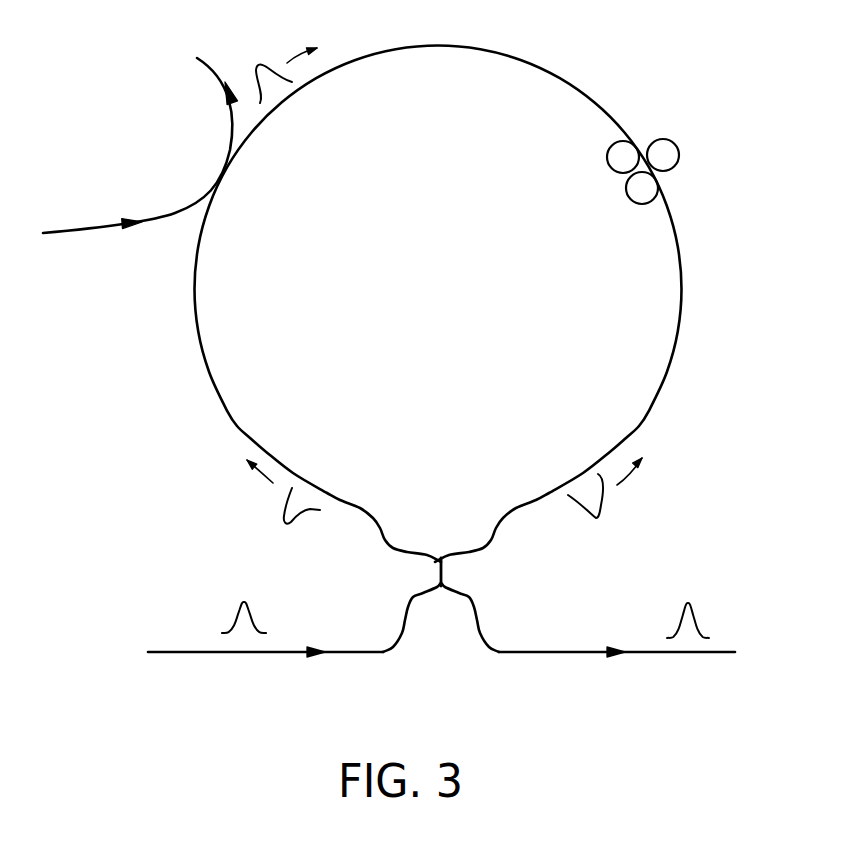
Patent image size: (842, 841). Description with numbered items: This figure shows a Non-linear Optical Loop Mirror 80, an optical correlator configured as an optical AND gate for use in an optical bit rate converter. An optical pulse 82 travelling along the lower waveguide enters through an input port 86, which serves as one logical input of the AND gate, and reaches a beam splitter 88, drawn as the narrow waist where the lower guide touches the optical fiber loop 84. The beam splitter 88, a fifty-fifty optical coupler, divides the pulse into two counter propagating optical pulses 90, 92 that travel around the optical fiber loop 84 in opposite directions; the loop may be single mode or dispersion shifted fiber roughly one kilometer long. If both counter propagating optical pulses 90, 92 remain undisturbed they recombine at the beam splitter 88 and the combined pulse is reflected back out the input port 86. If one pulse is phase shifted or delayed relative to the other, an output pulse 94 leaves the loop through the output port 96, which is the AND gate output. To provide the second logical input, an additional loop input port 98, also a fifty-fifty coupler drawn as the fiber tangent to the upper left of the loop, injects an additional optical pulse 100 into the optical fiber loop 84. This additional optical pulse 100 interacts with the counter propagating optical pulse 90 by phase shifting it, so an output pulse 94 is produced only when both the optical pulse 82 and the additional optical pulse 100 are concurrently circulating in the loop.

The Non-linear Optical Loop Mirror 80 is at (557, 33).
The optical pulse 82 is at (237, 612).
The optical fiber loop 84 is at (563, 78).
The input port 86 is at (400, 625).
The beam splitter 88 is at (440, 566).
The counter propagating optical pulse 90 is at (288, 528).
The counter propagating optical pulse 92 is at (598, 520).
The output pulse 94 is at (700, 613).
The output port 96 is at (482, 622).
The additional loop input port 98 is at (173, 217).
The additional optical pulse 100 is at (258, 63).